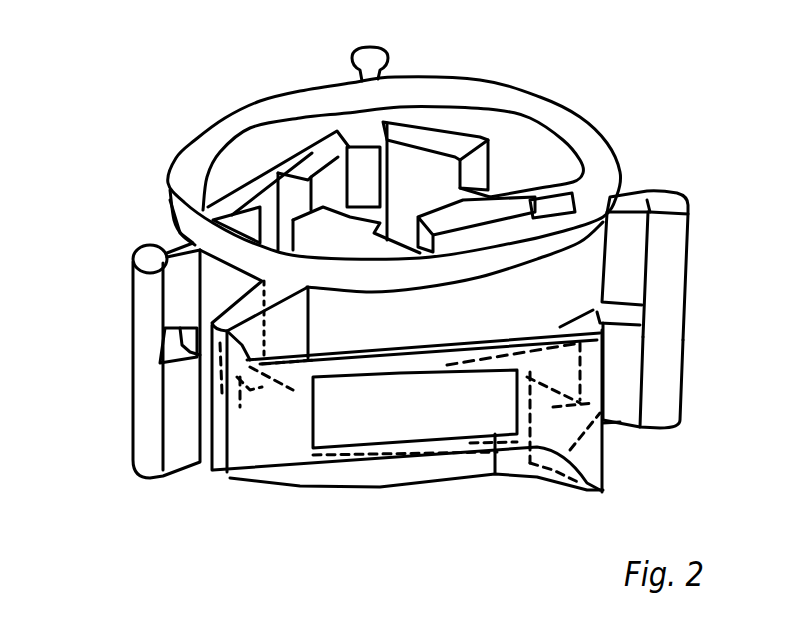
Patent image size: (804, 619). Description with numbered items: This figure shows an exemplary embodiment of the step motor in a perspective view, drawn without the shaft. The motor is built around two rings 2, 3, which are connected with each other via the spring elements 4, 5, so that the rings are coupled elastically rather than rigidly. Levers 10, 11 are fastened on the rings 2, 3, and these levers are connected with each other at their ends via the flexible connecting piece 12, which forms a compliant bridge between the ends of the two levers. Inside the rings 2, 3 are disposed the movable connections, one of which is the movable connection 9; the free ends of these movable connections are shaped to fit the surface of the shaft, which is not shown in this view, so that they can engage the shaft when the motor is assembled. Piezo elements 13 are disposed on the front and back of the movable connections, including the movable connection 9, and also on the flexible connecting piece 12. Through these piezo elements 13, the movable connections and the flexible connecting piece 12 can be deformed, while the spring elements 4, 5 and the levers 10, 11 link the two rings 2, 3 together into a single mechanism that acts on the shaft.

The ring 2 is at (593, 145).
The ring 3 is at (317, 477).
The spring element 4 is at (627, 258).
The spring element 5 is at (622, 383).
The movable connection 9 is at (453, 138).
The lever 10 is at (537, 475).
The lever 11 is at (227, 313).
The flexible connecting piece 12 is at (258, 433).
The piezo element 13 is at (367, 167).